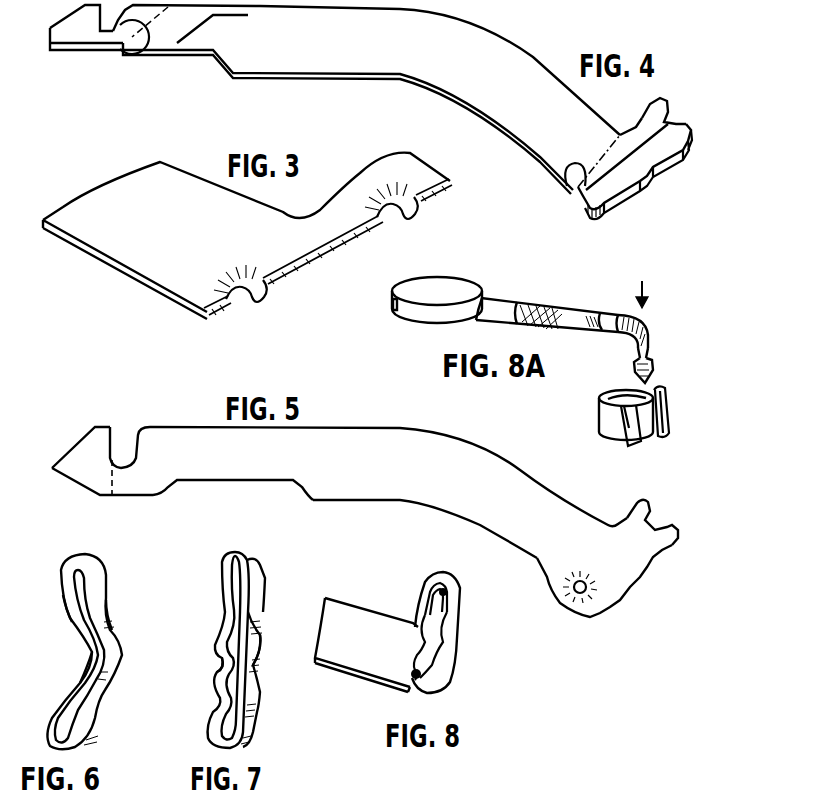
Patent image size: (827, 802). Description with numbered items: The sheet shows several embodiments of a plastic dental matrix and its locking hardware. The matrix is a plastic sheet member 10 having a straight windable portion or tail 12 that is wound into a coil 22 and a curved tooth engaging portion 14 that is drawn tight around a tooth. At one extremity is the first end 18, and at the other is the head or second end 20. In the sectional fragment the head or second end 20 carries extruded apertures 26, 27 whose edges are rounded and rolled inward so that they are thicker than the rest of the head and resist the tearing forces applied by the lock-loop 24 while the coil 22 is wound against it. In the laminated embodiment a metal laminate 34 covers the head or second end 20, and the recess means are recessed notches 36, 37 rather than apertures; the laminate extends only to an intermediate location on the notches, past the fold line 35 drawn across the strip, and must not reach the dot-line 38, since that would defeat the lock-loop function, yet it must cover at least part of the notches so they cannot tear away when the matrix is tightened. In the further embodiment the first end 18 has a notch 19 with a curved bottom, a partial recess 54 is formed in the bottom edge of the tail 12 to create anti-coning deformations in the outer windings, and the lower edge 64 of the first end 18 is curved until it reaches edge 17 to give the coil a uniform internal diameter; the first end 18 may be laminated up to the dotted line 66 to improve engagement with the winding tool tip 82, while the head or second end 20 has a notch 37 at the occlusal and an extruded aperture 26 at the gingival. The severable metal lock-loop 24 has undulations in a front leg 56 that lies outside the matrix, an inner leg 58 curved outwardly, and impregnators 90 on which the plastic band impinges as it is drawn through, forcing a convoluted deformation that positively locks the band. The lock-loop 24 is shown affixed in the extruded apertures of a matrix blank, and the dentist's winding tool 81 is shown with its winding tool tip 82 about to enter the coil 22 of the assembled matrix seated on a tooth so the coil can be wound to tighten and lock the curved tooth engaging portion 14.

In FIG. 4, the plastic sheet member 10 is at (417, 91).
In FIG. 5, the plastic sheet member 10 is at (399, 419).
In FIG. 5, the straight windable portion or tail 12 is at (283, 466).
In FIG. 3, the curved tooth engaging portion 14 is at (123, 242).
In FIG. 8A, the curved tooth engaging portion 14 is at (603, 427).
In FIG. 5, the curved tooth engaging portion 14 is at (519, 530).
In FIG. 8, the curved tooth engaging portion 14 is at (353, 613).
In FIG. 5, the edge 17 is at (75, 447).
In FIG. 4, the first end 18 is at (75, 38).
In FIG. 5, the first end 18 is at (95, 456).
In FIG. 4, the notch 19 is at (136, 52).
In FIG. 5, the notch 19 is at (128, 466).
In FIG. 4, the head or second end 20 is at (617, 185).
In FIG. 3, the head or second end 20 is at (308, 248).
In FIG. 5, the head or second end 20 is at (623, 578).
In FIG. 8, the head or second end 20 is at (450, 633).
In FIG. 8A, the coil 22 is at (638, 433).
In FIG. 8A, the lock-loop 24 is at (664, 428).
In FIG. 6, the lock-loop 24 is at (104, 562).
In FIG. 7, the lock-loop 24 is at (267, 577).
In FIG. 8, the lock-loop 24 is at (413, 623).
In FIG. 3, the extruded aperture 26 is at (282, 291).
In FIG. 5, the extruded aperture 26 is at (582, 594).
In FIG. 8, the extruded aperture 26 is at (410, 686).
In FIG. 3, the extruded aperture 27 is at (392, 216).
In FIG. 8, the extruded aperture 27 is at (447, 590).
In FIG. 4, the metal laminate 34 is at (660, 142).
In FIG. 4, the fold line 35 is at (628, 147).
In FIG. 4, the recessed notch 36 is at (581, 206).
In FIG. 4, the recessed notch 37 is at (665, 122).
In FIG. 5, the recessed notch 37 is at (662, 520).
In FIG. 4, the dot-line 38 is at (564, 189).
In FIG. 5, the partial recess 54 is at (240, 483).
In FIG. 6, the front leg 56 is at (113, 688).
In FIG. 7, the front leg 56 is at (260, 688).
In FIG. 6, the inner leg 58 is at (78, 668).
In FIG. 5, the lower edge 64 is at (68, 490).
In FIG. 5, the dotted line 66 is at (108, 484).
In FIG. 8A, the insertion tool handle 81 is at (504, 308).
In FIG. 8A, the winding tool tip 82 is at (651, 366).
In FIG. 6, the impregnators 90 is at (77, 712).
In FIG. 7, the impregnators 90 is at (221, 680).
In FIG. 8, the impregnators 90 is at (417, 665).